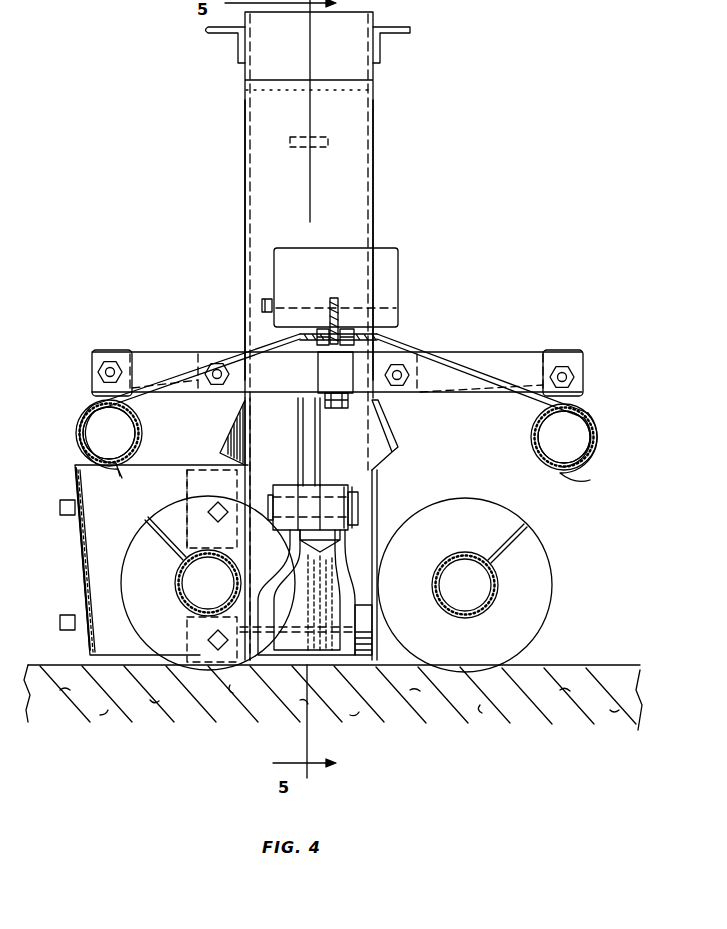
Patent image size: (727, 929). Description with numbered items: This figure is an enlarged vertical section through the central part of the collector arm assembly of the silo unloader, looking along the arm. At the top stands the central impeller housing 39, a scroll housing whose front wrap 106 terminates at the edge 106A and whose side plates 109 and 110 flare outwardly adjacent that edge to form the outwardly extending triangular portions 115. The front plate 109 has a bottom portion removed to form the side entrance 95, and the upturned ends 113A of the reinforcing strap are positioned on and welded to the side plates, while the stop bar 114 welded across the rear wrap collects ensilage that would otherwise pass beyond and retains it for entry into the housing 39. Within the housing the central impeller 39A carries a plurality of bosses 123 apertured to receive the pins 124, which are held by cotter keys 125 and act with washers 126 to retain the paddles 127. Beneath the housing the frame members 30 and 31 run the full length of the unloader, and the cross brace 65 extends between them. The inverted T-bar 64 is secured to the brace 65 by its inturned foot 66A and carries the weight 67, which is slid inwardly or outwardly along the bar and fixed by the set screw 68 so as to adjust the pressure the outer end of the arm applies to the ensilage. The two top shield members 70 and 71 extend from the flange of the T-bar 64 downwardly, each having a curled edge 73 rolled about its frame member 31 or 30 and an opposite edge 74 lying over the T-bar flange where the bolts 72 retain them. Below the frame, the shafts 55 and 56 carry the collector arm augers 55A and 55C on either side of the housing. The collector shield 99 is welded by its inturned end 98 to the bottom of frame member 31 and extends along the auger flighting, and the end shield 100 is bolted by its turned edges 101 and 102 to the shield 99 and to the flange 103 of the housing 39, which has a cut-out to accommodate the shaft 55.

The frame member 30 is at (568, 472).
The frame member 31 is at (140, 436).
The central impeller housing 39 is at (390, 143).
The central impeller 39A is at (288, 460).
The shaft 55 is at (175, 585).
The collector arm auger 55A is at (135, 625).
The collector arm auger 55C is at (552, 617).
The shaft 56 is at (498, 584).
The T-bar 64 is at (340, 300).
The cross brace 65 is at (525, 355).
The inturned foot 66A is at (318, 372).
The weight 67 is at (398, 250).
The set screw 68 is at (262, 305).
The top shield member 70 is at (180, 354).
The top shield member 71 is at (470, 362).
The bolt 72 is at (320, 330).
The curled edge 73 is at (76, 437).
The opposite edge 74 is at (300, 329).
The side entrance 95 is at (377, 540).
The inturned end 98 is at (104, 470).
The collector shield 99 is at (75, 545).
The end shield 100 is at (154, 505).
The turned edge 101 is at (82, 535).
The turned edge 102 is at (84, 588).
The flange 103 is at (179, 470).
The front wrap 106 is at (333, 237).
The front wrap terminal edge 106A is at (268, 400).
The front side plate 109 is at (375, 188).
The rear side plate 110 is at (245, 186).
The upturned end 113A is at (377, 617).
The stop bar 114 is at (372, 668).
The triangular portion 115 is at (227, 434).
The boss 123 is at (322, 485).
The pin 124 is at (358, 505).
The cotter key 125 is at (352, 525).
The washer 126 is at (348, 490).
The paddle 127 is at (355, 570).